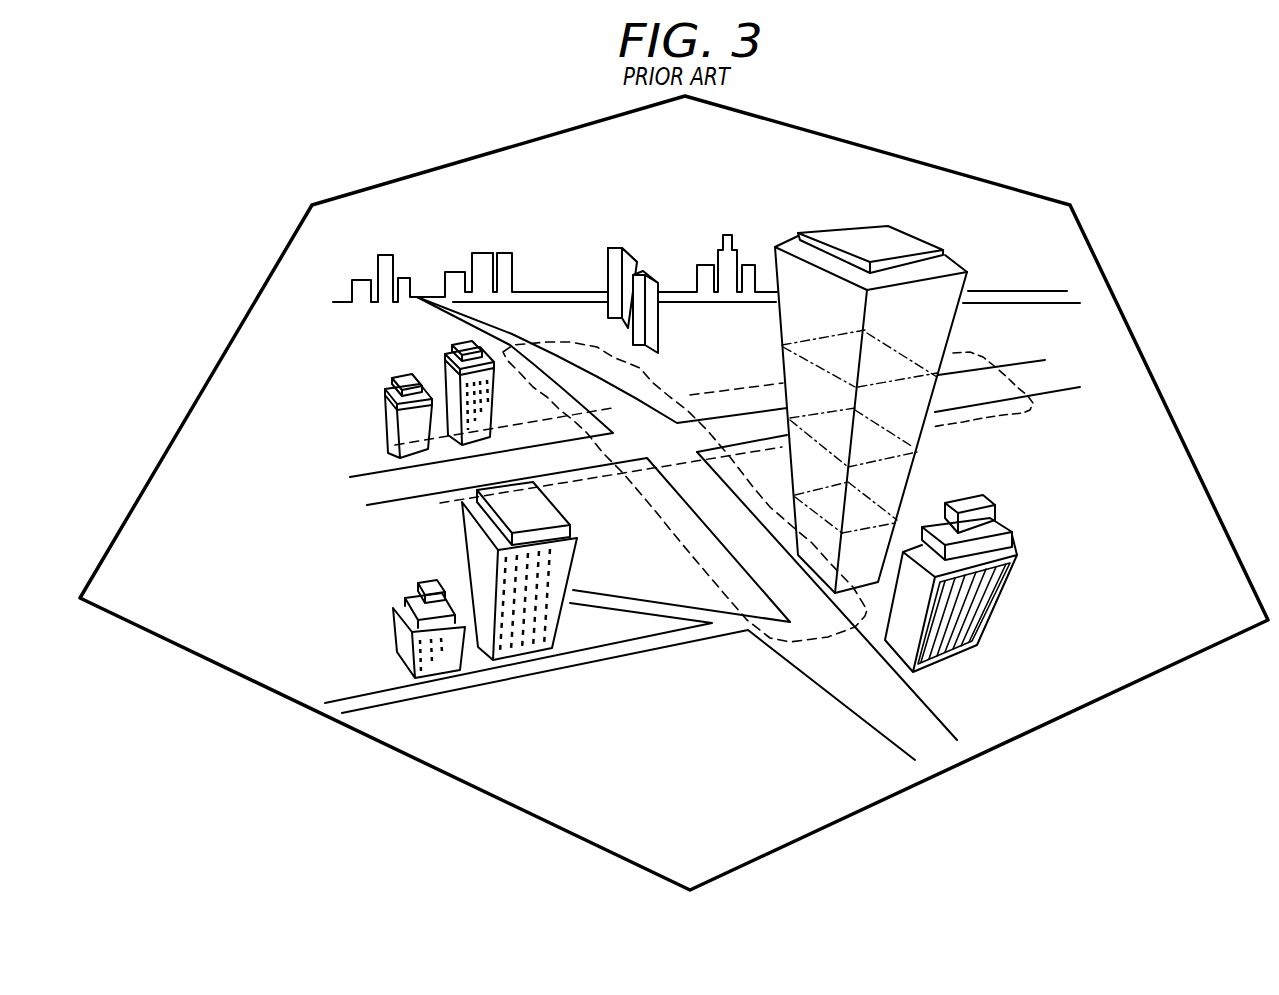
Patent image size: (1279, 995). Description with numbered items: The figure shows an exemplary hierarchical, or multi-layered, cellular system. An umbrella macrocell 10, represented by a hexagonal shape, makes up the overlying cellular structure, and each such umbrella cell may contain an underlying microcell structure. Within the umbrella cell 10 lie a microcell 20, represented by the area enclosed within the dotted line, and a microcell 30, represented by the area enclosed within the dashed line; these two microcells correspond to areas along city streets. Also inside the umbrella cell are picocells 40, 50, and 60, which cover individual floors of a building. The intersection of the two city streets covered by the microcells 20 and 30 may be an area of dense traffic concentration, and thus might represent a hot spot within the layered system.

The umbrella macrocell 10 is at (399, 753).
The microcell 20 is at (568, 342).
The microcell 30 is at (443, 508).
The picocell 40 is at (922, 365).
The picocell 50 is at (927, 440).
The picocell 60 is at (848, 537).